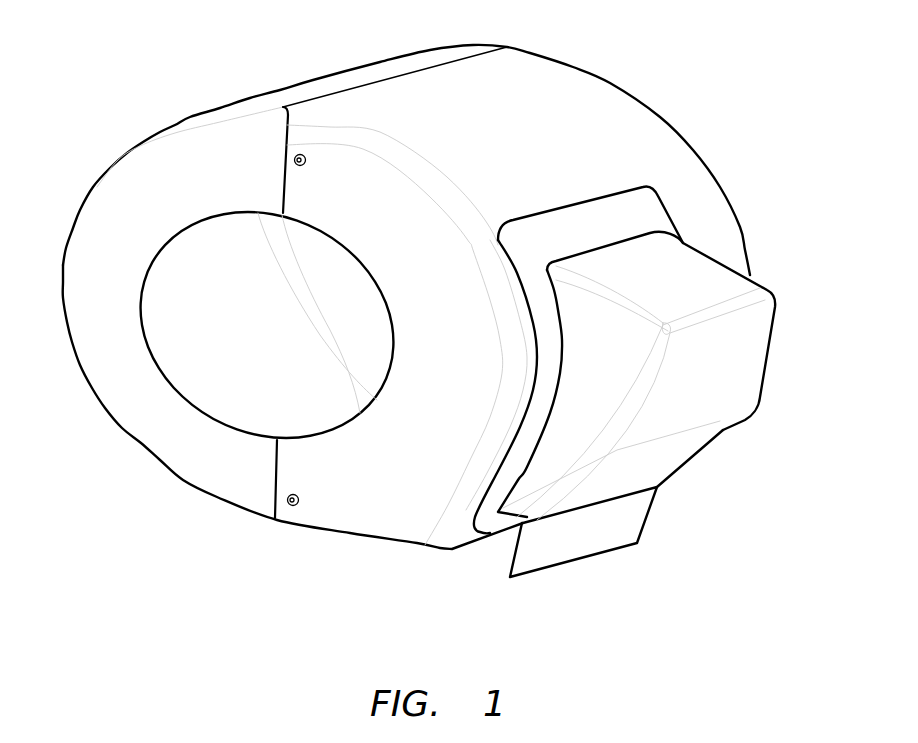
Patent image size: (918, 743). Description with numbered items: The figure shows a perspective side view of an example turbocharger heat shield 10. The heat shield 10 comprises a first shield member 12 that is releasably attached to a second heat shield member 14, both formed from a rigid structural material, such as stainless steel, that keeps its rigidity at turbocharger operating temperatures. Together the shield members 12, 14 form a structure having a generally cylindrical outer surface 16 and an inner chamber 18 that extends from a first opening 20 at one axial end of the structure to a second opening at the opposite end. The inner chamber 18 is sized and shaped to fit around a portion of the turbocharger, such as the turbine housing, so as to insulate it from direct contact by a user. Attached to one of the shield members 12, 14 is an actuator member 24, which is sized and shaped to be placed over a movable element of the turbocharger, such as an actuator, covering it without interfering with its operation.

The turbocharger heat shield 10 is at (694, 118).
The first shield member 12 is at (192, 158).
The second heat shield member 14 is at (565, 106).
The generally cylindrical outer surface 16 is at (313, 80).
The inner chamber 18 is at (172, 279).
The first opening 20 is at (177, 382).
The actuator member 24 is at (753, 345).